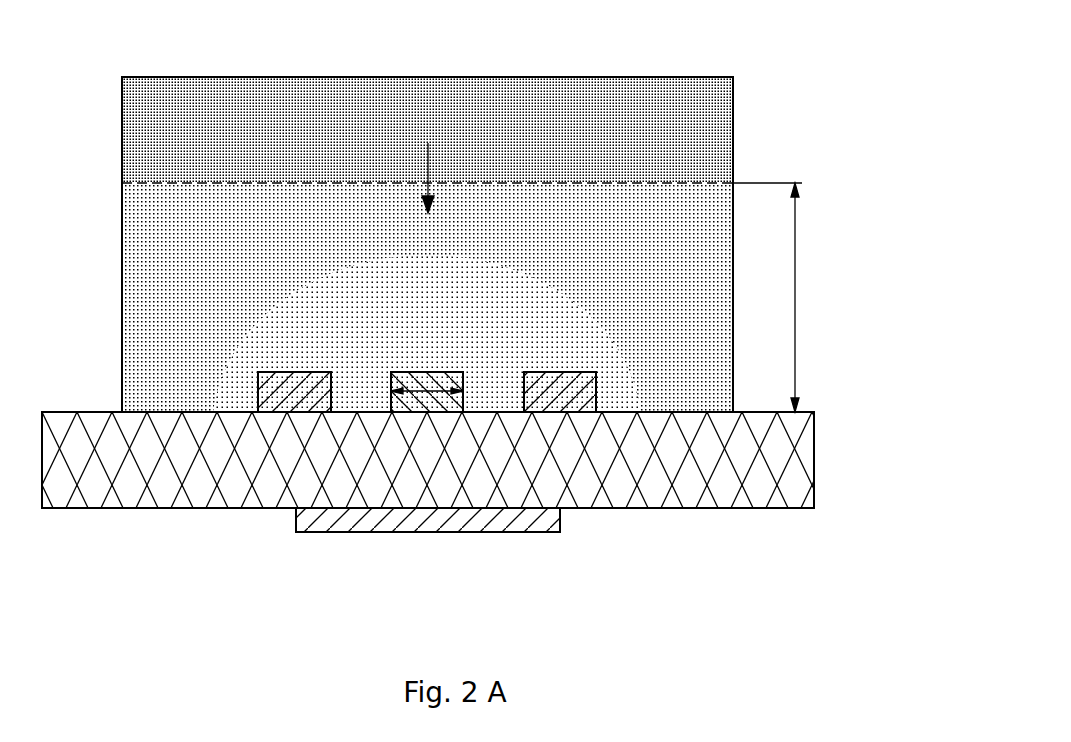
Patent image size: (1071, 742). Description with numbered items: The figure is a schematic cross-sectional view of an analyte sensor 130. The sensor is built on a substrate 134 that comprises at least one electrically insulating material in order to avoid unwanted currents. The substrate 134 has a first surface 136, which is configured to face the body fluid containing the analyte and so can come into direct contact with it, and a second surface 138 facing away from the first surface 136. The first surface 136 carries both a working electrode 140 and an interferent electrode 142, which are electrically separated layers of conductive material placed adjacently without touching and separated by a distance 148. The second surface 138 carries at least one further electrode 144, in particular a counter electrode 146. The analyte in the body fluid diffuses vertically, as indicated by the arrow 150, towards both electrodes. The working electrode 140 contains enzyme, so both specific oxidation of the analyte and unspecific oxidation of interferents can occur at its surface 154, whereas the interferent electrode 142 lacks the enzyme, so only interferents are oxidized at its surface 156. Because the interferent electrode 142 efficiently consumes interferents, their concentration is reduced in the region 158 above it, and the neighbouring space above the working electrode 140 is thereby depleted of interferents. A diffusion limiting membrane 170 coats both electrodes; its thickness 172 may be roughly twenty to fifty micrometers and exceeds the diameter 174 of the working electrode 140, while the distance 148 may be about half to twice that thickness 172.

The analyte sensor 130 is at (807, 143).
The substrate 134 is at (830, 457).
The first surface 136 is at (775, 403).
The second surface 138 is at (760, 508).
The working electrode 140 is at (448, 422).
The interferent electrode 142 is at (582, 424).
The further electrode 144 is at (481, 525).
The counter electrode 146 is at (428, 520).
The distance 148 is at (350, 397).
The arrow 150 is at (427, 175).
The surface of the working electrode 154 is at (443, 362).
The surface of the interferent electrode 156 is at (302, 360).
The region above the interferent electrode 158 is at (314, 362).
The diffusion limiting membrane 170 is at (653, 175).
The thickness 172 is at (797, 298).
The diameter 174 is at (427, 393).